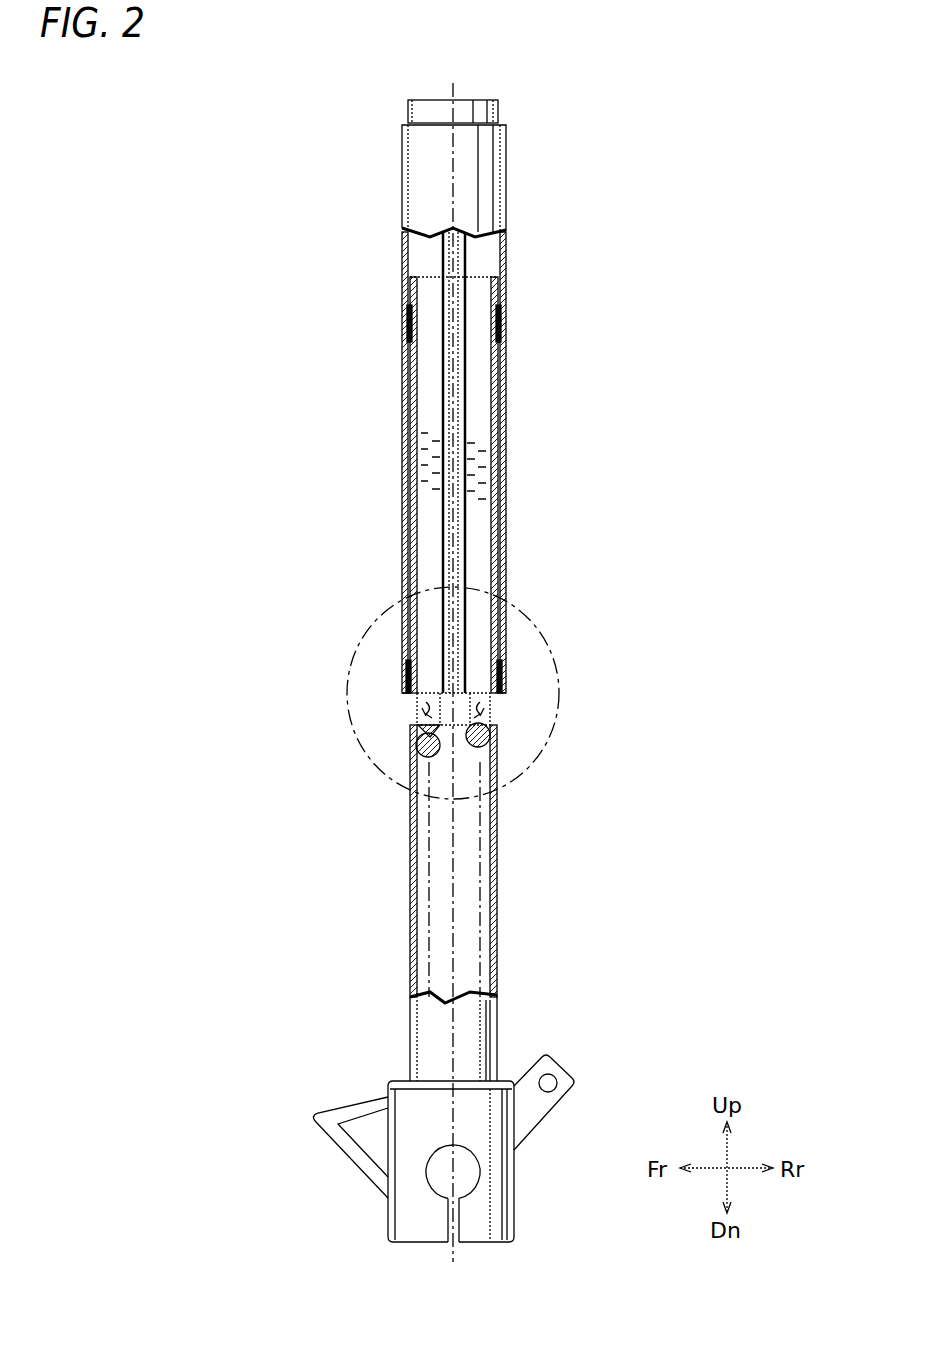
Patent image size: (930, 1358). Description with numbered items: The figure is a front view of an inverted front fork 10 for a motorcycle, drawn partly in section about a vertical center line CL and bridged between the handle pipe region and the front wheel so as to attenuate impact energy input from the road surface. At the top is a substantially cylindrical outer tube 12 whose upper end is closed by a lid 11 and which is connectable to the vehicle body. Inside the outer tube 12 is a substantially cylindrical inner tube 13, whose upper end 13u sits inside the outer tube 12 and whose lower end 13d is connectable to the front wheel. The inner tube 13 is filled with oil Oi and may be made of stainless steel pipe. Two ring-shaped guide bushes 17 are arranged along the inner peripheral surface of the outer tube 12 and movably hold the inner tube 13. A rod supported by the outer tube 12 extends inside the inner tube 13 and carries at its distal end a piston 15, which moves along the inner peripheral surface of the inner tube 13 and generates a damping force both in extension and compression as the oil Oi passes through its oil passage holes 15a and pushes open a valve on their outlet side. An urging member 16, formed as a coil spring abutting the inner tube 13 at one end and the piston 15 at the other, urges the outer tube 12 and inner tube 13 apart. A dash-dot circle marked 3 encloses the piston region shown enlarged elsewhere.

The front fork 10 is at (287, 149).
The lid 11 is at (478, 99).
The outer tube 12 is at (507, 248).
The inner tube 13 is at (497, 897).
The upper end 13u is at (480, 277).
The lower end 13d is at (498, 1070).
The piston 15 is at (485, 690).
The oil passage holes 15a is at (427, 713).
The urging member 16 is at (480, 818).
The guide bushes 17 is at (407, 316).
The detail region shown in FIG. 3 is at (531, 619).
The center line CL is at (448, 82).
The oil Oi is at (483, 450).